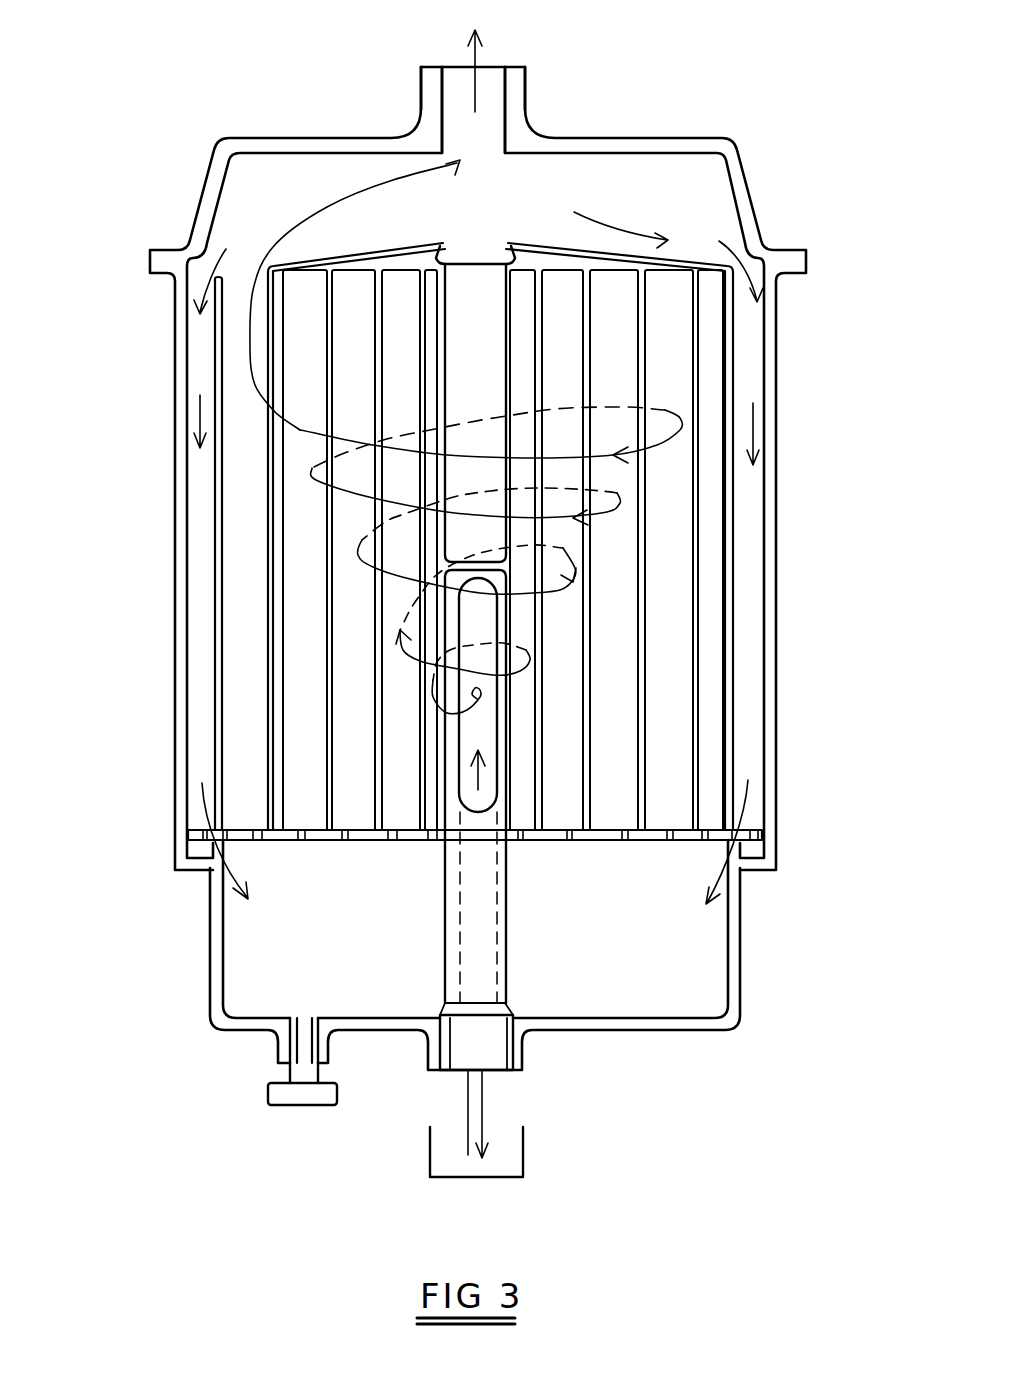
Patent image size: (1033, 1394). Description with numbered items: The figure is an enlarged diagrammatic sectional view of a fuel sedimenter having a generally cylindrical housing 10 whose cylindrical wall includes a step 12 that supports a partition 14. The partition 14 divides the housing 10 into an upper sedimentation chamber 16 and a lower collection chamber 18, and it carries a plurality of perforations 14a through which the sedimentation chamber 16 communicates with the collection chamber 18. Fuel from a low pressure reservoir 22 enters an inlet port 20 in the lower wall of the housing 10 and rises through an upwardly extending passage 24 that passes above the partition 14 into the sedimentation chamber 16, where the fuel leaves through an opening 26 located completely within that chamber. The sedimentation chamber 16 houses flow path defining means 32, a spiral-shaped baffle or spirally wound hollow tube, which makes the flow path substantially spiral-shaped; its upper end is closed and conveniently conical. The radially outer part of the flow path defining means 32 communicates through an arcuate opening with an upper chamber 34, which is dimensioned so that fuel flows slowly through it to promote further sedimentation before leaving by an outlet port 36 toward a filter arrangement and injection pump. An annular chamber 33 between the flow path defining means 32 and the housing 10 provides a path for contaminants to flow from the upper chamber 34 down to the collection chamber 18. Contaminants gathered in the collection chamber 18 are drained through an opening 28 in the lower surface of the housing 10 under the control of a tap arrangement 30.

The housing 10 is at (775, 494).
The step 12 is at (762, 861).
The partition 14 is at (693, 837).
The perforations 14a is at (903, 895).
The sedimentation chamber 16 is at (491, 598).
The collection chamber 18 is at (475, 955).
The inlet port 20 is at (520, 1043).
The low pressure reservoir 22 is at (523, 1143).
The passage 24 is at (455, 928).
The opening 26 is at (470, 796).
The opening 28 is at (278, 1037).
The tap arrangement 30 is at (298, 1093).
The flow path defining means 32 is at (733, 687).
The annular chamber 33 is at (750, 593).
The upper chamber 34 is at (478, 295).
The outlet port 36 is at (530, 108).